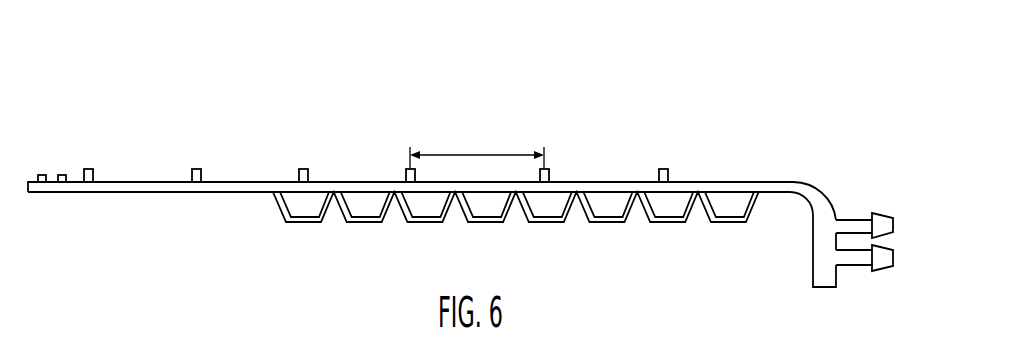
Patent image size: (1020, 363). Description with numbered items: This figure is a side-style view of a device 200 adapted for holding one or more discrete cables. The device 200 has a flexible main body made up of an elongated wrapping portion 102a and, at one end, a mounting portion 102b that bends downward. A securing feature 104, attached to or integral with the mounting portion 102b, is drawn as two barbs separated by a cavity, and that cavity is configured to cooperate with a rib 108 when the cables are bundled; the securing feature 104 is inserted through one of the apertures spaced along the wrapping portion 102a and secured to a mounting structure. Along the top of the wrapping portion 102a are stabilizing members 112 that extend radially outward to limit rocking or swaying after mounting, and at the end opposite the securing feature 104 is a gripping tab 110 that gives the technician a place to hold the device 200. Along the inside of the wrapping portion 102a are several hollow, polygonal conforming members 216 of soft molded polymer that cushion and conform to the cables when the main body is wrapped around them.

The device 200 is at (94, 80).
The wrapping portion 102a is at (133, 186).
The mounting portion 102b is at (819, 249).
The securing feature 104 is at (883, 222).
The rib 108 is at (549, 174).
The gripping tab 110 is at (93, 176).
The stabilizing member 112 is at (201, 176).
The conforming member 216 is at (308, 219).